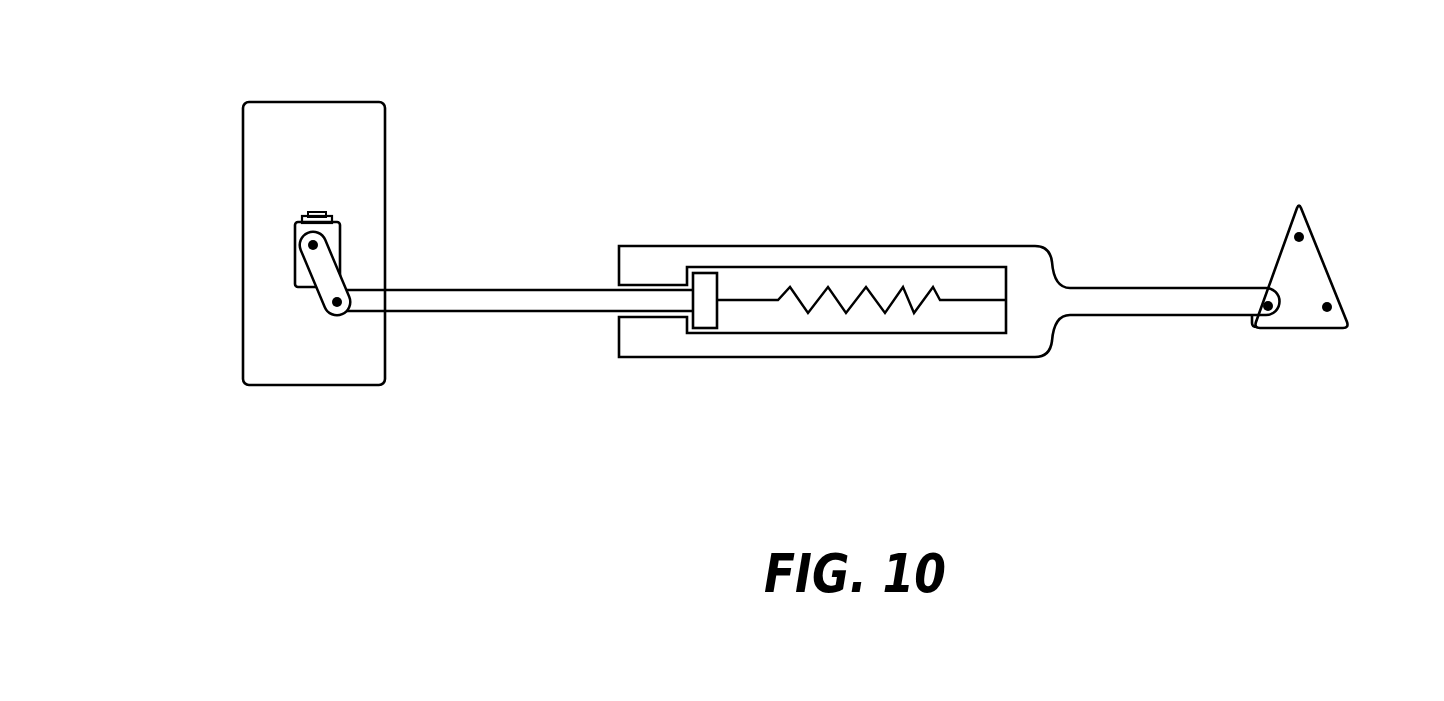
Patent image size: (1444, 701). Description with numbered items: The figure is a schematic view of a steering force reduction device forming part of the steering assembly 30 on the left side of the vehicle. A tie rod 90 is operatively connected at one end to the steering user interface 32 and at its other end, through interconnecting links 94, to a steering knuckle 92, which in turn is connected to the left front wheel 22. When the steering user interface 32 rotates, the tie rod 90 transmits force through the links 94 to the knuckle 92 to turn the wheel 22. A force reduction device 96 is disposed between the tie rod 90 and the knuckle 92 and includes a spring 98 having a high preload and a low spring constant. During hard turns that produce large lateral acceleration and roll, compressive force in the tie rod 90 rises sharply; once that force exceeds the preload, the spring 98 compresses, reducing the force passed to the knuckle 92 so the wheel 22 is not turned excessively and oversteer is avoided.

The left front wheel 22 is at (265, 145).
The steering assembly 30 is at (1166, 166).
The steering user interface 32 is at (1333, 245).
The tie rod 90 is at (1127, 304).
The steering knuckle 92 is at (297, 270).
The interconnecting links 94 is at (330, 260).
The force reduction device 96 is at (868, 240).
The spring 98 is at (880, 303).